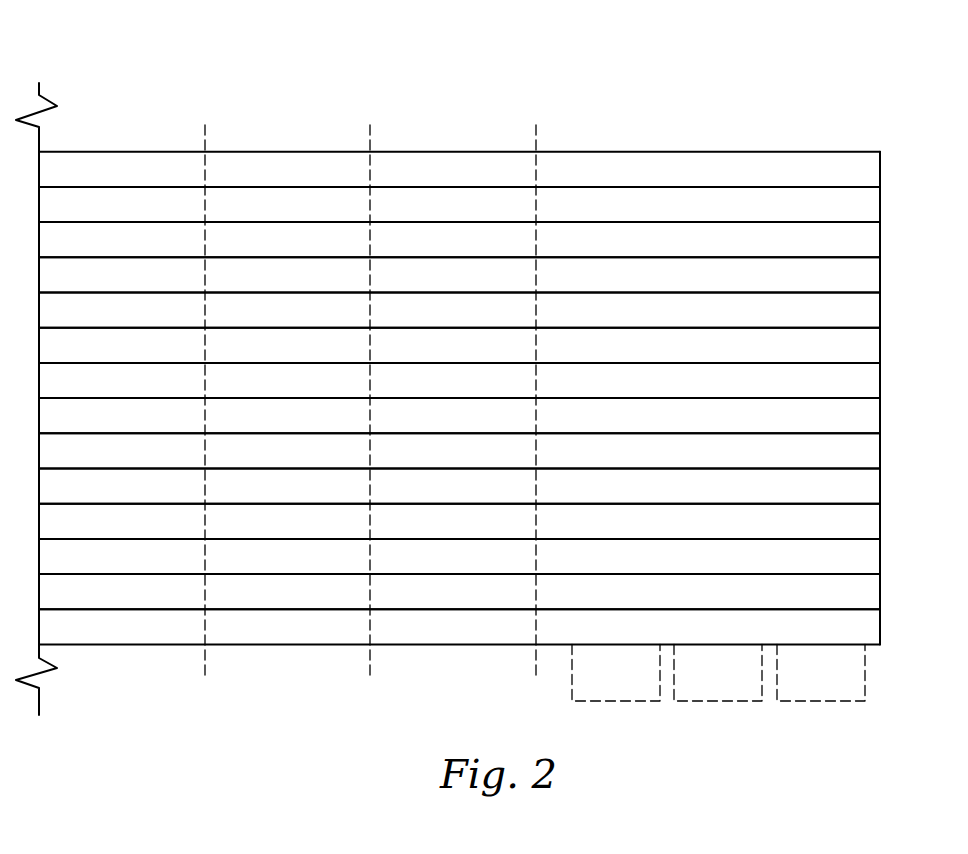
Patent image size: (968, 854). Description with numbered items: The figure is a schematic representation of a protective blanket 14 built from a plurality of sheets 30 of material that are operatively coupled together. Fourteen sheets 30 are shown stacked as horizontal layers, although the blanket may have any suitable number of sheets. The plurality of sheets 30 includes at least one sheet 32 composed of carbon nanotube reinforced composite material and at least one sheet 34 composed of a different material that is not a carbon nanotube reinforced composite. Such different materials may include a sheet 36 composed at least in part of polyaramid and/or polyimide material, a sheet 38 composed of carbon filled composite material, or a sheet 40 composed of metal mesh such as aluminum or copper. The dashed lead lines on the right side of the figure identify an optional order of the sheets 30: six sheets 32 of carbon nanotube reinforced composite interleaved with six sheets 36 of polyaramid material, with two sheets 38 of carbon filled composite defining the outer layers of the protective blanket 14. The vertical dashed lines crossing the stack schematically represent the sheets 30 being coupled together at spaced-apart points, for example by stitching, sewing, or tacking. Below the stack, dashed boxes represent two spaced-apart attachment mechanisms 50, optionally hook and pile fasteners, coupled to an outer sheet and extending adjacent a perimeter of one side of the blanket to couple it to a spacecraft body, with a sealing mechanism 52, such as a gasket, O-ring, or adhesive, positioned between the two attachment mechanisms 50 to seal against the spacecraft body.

The protective blanket 14 is at (777, 48).
The sheets 30 is at (680, 65).
The sheet of carbon nanotube reinforced composite material 32 is at (583, 86).
The sheet of different material 34 is at (518, 83).
The polyaramid and/or polyimide sheet 36 is at (457, 116).
The carbon filled composite sheet 38 is at (397, 116).
The metal mesh sheet 40 is at (335, 118).
The attachment mechanism 50 is at (632, 701).
The sealing mechanism 52 is at (735, 701).